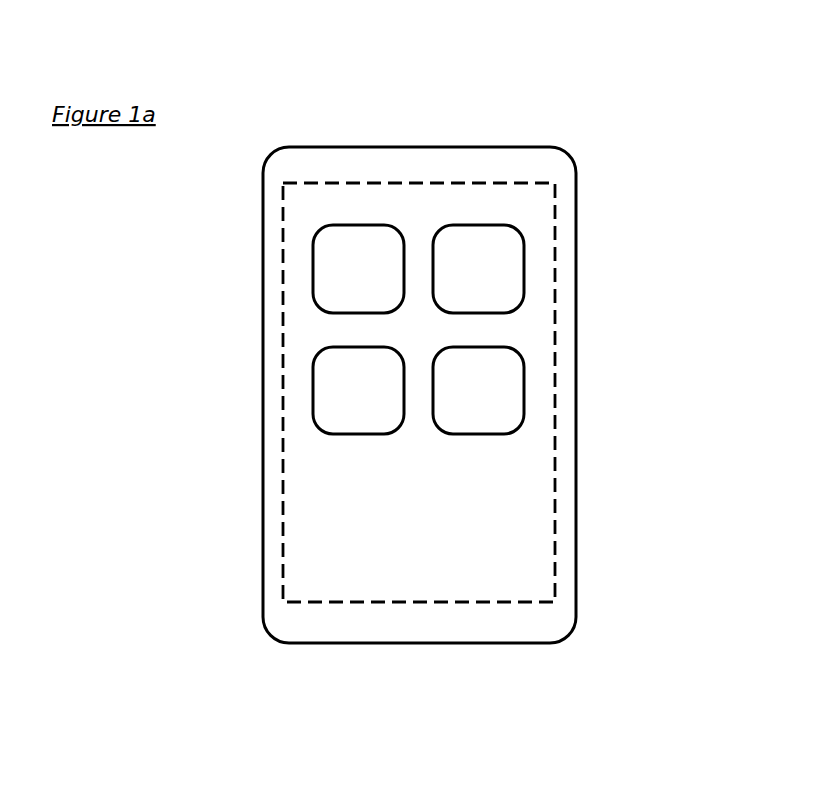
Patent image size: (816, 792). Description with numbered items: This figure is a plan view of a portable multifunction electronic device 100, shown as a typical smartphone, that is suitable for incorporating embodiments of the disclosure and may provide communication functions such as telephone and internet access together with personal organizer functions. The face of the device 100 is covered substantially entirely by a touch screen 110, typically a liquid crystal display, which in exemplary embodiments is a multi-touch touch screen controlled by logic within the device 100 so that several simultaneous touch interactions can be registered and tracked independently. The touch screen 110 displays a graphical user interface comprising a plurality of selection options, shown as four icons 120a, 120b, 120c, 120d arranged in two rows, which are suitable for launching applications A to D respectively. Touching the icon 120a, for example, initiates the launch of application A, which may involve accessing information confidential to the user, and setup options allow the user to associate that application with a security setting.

The electronic device 100 is at (576, 160).
The touch screen 110 is at (555, 536).
The icon 120a is at (313, 250).
The icon 120b is at (313, 375).
The icon 120c is at (524, 250).
The icon 120d is at (524, 380).